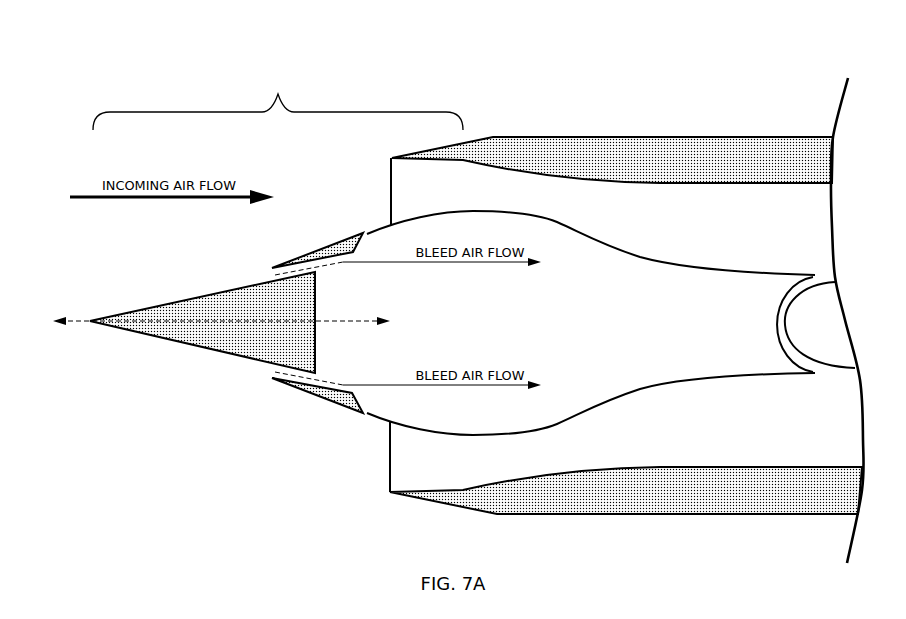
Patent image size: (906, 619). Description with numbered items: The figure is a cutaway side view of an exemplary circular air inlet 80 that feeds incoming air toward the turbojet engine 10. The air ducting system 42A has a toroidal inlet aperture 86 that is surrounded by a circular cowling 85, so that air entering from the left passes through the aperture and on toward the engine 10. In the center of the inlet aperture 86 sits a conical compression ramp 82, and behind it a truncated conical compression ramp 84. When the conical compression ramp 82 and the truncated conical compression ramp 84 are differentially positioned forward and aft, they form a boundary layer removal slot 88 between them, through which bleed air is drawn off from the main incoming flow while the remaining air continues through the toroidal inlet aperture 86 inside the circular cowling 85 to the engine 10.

The turbojet engine 10 is at (833, 352).
The air ducting system 42A is at (603, 74).
The circular air inlet 80 is at (278, 99).
The conical compression ramp 82 is at (235, 335).
The truncated conical compression ramp 84 is at (342, 246).
The circular cowling 85 is at (490, 137).
The toroidal inlet aperture 86 is at (400, 205).
The boundary layer removal slot 88 is at (260, 272).